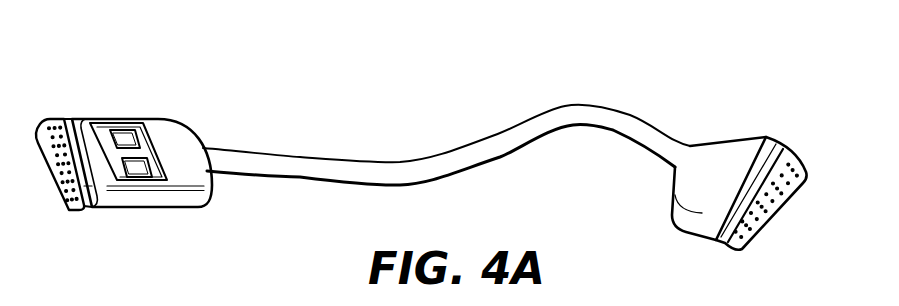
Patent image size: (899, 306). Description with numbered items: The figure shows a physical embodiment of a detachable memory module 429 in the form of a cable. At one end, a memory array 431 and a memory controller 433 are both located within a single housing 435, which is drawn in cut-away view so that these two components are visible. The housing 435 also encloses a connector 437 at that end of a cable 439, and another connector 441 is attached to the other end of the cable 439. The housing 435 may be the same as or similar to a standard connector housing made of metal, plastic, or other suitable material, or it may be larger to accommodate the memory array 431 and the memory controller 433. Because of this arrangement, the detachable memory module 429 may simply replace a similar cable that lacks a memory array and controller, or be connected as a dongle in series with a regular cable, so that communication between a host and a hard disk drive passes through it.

The detachable memory module 429 is at (409, 80).
The memory array 431 is at (116, 137).
The memory controller 433 is at (141, 168).
The housing 435 is at (101, 118).
The connector 437 is at (55, 188).
The cable 439 is at (250, 148).
The connector 441 is at (779, 192).